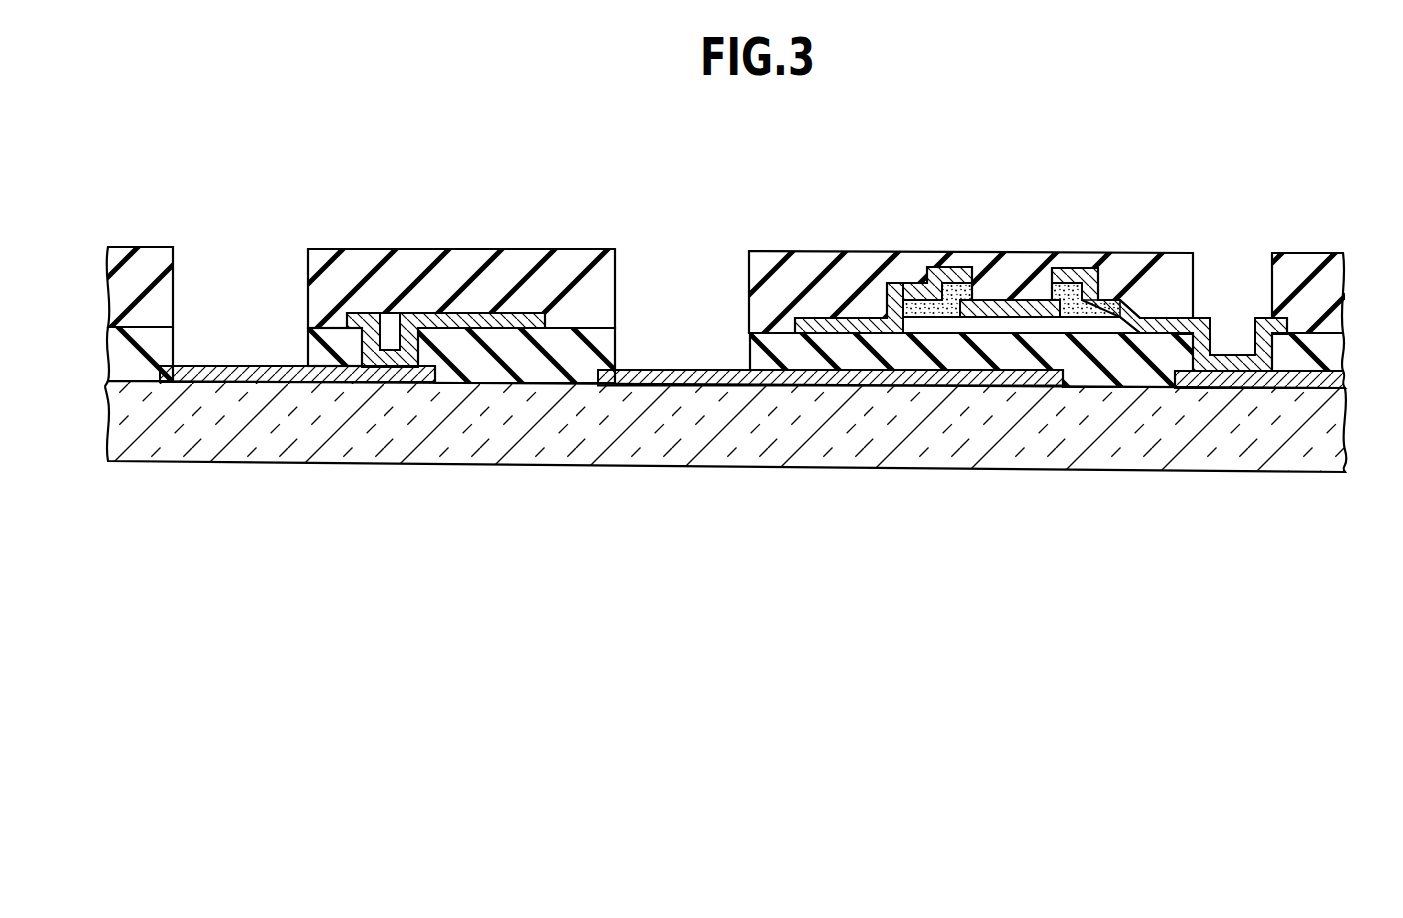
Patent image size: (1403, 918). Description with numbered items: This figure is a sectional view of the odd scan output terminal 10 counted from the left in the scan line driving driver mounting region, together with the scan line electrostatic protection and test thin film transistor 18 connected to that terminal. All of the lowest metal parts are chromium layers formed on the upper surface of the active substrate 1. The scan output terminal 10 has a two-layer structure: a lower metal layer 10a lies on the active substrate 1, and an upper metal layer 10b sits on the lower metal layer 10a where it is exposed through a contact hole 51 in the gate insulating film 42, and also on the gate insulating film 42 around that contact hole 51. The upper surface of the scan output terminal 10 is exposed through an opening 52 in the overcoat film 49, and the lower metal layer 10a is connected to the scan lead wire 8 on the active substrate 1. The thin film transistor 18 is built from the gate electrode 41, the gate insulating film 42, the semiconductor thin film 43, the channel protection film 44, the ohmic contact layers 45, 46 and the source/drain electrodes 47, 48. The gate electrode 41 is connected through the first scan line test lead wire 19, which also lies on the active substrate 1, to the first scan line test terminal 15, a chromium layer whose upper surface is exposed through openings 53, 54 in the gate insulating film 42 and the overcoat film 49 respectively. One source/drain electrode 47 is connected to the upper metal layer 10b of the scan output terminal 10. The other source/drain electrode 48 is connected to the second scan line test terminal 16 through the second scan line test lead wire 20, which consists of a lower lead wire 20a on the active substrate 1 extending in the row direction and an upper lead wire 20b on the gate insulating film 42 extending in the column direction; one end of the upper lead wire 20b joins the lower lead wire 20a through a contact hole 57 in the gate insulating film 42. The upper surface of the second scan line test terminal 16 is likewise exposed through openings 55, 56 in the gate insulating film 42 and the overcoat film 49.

The active substrate 1 is at (1327, 422).
The scan lead wire 8 is at (1318, 384).
The scan output terminal 10 is at (1278, 517).
The lower metal layer 10a is at (1203, 384).
The upper metal layer 10b is at (1248, 384).
The first scan line test terminal 15 is at (680, 377).
The second scan line test terminal 16 is at (238, 372).
The scan line electrostatic protection and test thin film transistor 18 is at (1000, 212).
The first scan line test lead wire 19 is at (852, 377).
The second scan line test lead wire 20 is at (620, 346).
The lower lead wire 20a is at (387, 372).
The upper lead wire 20b is at (475, 323).
The gate electrode 41 is at (983, 382).
The gate insulating film 42 is at (1327, 354).
The semiconductor thin film 43 is at (1090, 337).
The channel protection film 44 is at (1030, 324).
The ohmic contact layer 45 is at (1062, 290).
The ohmic contact layer 46 is at (963, 290).
The source/drain electrode 47 is at (1128, 295).
The source/drain electrode 48 is at (912, 290).
The overcoat film 49 is at (1327, 291).
The contact hole 51 is at (1210, 343).
The opening 52 is at (1272, 278).
The opening 53 is at (620, 345).
The opening 54 is at (749, 280).
The opening 55 is at (176, 345).
The opening 56 is at (308, 272).
The contact hole 57 is at (380, 326).